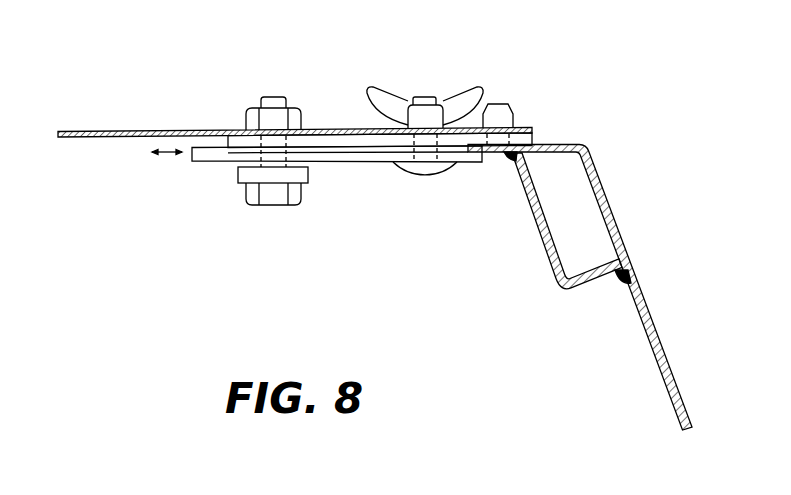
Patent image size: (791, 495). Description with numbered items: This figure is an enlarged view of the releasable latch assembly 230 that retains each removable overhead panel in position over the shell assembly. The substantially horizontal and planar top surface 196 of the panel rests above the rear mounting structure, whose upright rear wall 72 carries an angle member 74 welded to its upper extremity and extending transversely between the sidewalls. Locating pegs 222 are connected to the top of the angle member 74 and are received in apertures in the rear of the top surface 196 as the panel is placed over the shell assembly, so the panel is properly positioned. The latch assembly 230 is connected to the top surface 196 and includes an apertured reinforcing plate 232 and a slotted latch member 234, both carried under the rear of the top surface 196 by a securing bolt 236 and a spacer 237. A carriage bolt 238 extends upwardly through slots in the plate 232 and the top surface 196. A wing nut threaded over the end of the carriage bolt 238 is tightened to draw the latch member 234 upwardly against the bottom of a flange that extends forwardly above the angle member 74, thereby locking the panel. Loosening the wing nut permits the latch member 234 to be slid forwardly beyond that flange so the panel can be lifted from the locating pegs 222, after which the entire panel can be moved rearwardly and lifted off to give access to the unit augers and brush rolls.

The rear wall 72 is at (643, 289).
The angle member 74 is at (542, 235).
The top surface 196 is at (120, 131).
The locating peg 222 is at (502, 106).
The releasable latch assembly 230 is at (443, 56).
The apertured reinforcing plate 232 is at (353, 137).
The slotted latch member 234 is at (375, 162).
The securing bolt 236 is at (282, 97).
The spacer 237 is at (242, 173).
The carriage bolt 238 is at (427, 97).